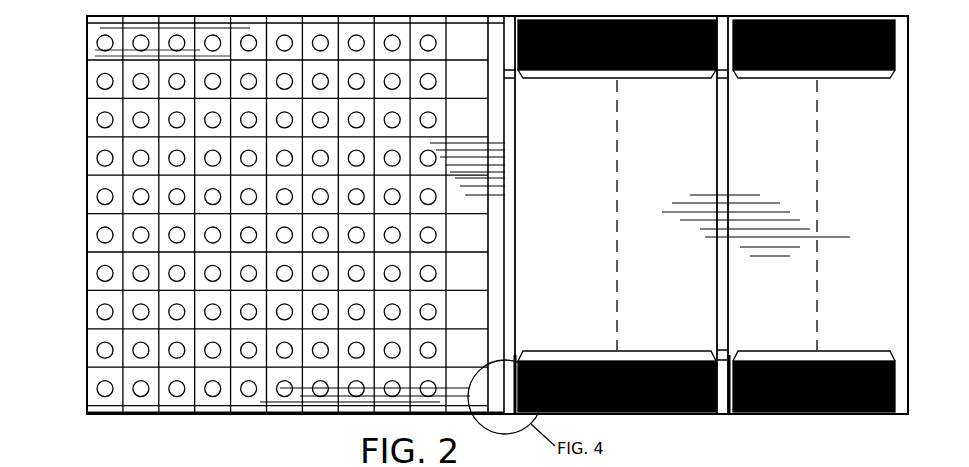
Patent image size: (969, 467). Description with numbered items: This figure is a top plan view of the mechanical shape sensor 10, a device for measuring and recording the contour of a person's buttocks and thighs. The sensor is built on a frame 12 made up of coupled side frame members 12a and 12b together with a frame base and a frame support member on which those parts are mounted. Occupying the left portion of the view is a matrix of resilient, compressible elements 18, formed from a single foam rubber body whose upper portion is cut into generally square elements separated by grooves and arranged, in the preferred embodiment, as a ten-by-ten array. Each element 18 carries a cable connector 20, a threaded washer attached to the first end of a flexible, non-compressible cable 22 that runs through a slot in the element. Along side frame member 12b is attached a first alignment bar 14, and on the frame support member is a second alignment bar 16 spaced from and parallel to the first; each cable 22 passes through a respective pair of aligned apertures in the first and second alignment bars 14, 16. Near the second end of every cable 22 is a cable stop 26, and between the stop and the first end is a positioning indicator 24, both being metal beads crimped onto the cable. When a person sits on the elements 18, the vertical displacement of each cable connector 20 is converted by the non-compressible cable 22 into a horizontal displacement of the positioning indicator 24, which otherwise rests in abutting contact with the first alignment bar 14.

The mechanical shape sensor 10 is at (68, 318).
The frame 12 is at (295, 245).
The side frame member 12a is at (87, 15).
The side frame member 12b is at (506, 96).
The first alignment bar 14 is at (512, 199).
The second alignment bar 16 is at (717, 172).
The resilient, compressible elements 18 is at (91, 118).
The cable connector 20 is at (100, 235).
The cable 22 is at (655, 414).
The positioning indicator 24 is at (520, 360).
The cable stop 26 is at (732, 360).